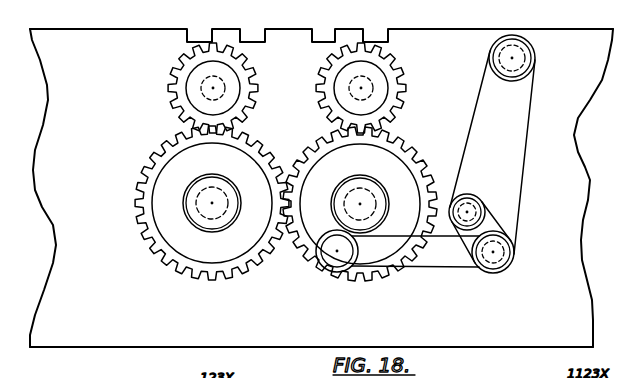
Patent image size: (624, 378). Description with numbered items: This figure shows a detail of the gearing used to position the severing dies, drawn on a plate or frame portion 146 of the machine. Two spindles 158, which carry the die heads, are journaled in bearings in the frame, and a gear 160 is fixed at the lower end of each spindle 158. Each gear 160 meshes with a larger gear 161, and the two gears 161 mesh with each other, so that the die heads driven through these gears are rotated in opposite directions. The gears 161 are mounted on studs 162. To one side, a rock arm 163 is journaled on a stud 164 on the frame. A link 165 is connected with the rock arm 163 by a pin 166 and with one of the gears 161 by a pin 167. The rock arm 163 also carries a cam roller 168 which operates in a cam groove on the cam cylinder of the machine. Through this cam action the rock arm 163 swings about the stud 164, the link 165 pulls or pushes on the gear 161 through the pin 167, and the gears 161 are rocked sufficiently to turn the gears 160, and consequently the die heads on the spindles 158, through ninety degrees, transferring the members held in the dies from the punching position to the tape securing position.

The plate 146 is at (278, 342).
The spindle 158 is at (205, 87).
The gear 160 is at (248, 72).
The gear 161 is at (263, 143).
The stud 162 is at (220, 183).
The rock arm 163 is at (523, 125).
The stud 164 is at (518, 60).
The link 165 is at (452, 265).
The pin 166 is at (493, 262).
The pin 167 is at (332, 258).
The cam roller 168 is at (468, 205).